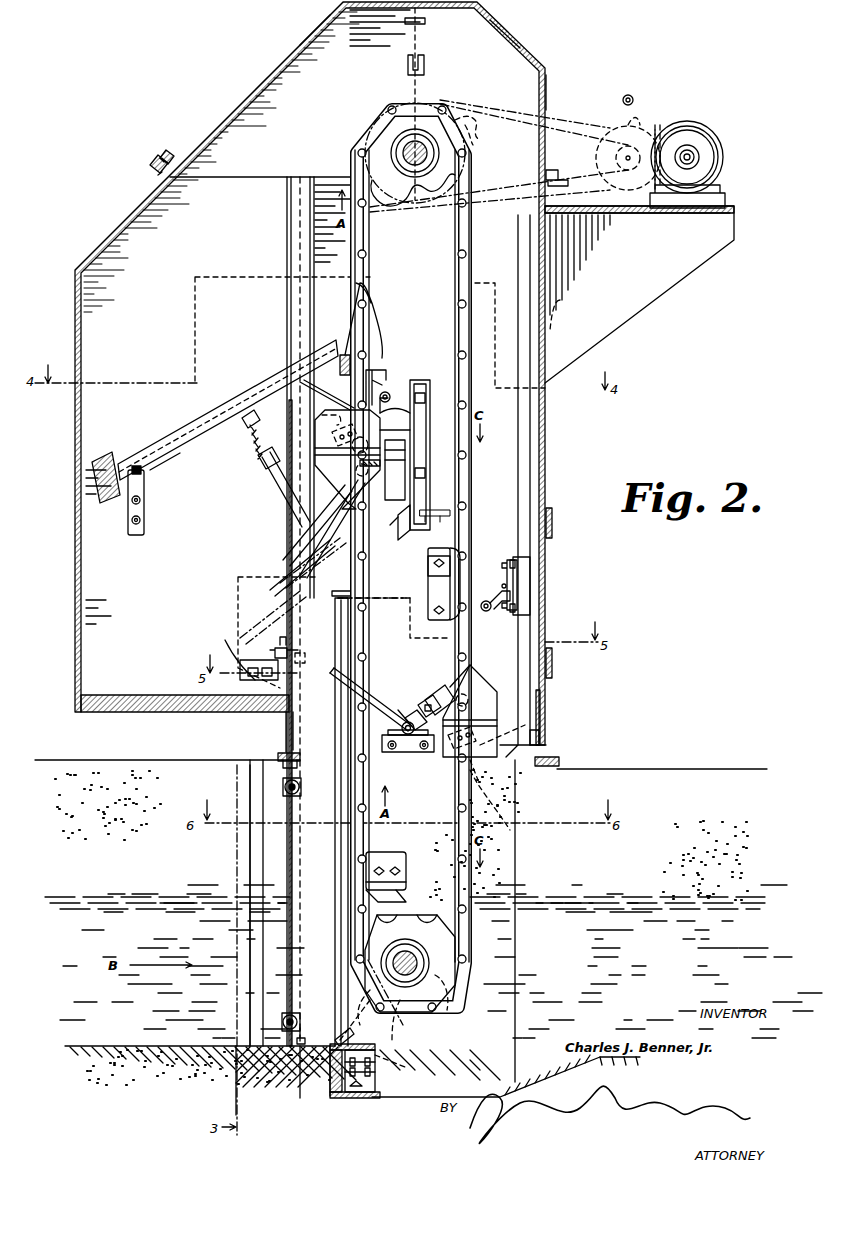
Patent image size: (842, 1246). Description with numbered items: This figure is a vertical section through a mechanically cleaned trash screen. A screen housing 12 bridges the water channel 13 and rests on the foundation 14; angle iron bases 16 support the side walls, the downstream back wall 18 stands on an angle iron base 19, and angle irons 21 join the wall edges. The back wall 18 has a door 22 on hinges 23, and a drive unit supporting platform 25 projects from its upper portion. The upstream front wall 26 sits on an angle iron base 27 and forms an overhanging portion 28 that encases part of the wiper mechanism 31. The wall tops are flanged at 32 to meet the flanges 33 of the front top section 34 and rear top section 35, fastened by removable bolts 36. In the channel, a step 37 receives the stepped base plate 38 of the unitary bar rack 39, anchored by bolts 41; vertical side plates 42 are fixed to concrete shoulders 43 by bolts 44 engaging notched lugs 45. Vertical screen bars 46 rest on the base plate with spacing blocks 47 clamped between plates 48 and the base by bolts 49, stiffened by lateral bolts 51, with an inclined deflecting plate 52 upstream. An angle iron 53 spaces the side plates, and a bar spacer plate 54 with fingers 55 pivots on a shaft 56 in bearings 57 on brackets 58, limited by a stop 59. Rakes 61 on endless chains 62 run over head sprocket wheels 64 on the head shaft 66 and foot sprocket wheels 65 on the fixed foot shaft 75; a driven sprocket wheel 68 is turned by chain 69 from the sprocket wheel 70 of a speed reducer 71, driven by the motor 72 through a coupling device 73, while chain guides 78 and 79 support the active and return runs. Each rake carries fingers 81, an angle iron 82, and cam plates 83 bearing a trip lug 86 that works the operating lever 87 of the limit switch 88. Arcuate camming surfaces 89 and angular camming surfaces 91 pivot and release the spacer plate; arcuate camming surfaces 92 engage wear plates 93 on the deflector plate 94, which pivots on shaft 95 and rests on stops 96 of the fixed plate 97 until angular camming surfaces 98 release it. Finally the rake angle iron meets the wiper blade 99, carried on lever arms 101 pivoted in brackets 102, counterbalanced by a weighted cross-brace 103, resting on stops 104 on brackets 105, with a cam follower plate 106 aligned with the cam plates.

The screen housing 12 is at (518, 50).
The channel 13 is at (692, 770).
The foundation 14 is at (534, 744).
The angle iron bases 16 is at (538, 724).
The back wall 18 is at (542, 702).
The angle iron base 19 is at (557, 757).
The angle irons 21 is at (530, 628).
The door 22 is at (538, 594).
The hinges 23 is at (547, 676).
The drive unit supporting platform 25 is at (730, 228).
The front wall 26 is at (286, 724).
The angle iron base 27 is at (282, 748).
The overhanging portion 28 is at (78, 524).
The wiper mechanism 31 is at (201, 417).
The flanges 32 is at (159, 167).
The opposing flanges 33 is at (166, 158).
The front top section 34 is at (314, 45).
The rear top section 35 is at (546, 86).
The bolts 36 is at (170, 160).
The step 37 is at (296, 1090).
The base plate 38 is at (330, 1090).
The unitary bar rack 39 is at (332, 931).
The bolts 41 is at (292, 1064).
The vertical side plates 42 is at (312, 842).
The concrete shoulders 43 is at (250, 866).
The bolts 44 is at (285, 782).
The notched lugs 45 is at (280, 792).
The vertical screen bars 46 is at (341, 858).
The spacing blocks 47 is at (346, 1032).
The plates 48 is at (346, 1050).
The bolts 49 is at (359, 1070).
The bolts 51 is at (346, 1032).
The inclined deflecting plate 52 is at (328, 1040).
The angle iron 53 is at (288, 646).
The bar spacer plate 54 is at (394, 700).
The fingers 55 is at (337, 683).
The shaft 56 is at (410, 714).
The bearings 57 is at (402, 724).
The brackets 58 is at (408, 764).
The stop 59 is at (428, 695).
The rakes 61 is at (320, 530).
The endless chains 62 is at (364, 254).
The head sprocket wheel 64 is at (462, 136).
The foot sprocket wheel 65 is at (443, 974).
The head shaft 66 is at (392, 138).
The driven sprocket wheel 68 is at (472, 136).
The chain 69 is at (580, 125).
The sprocket wheel 70 is at (602, 156).
The speed reducer 71 is at (652, 120).
The motor 72 is at (700, 122).
The coupling device 73 is at (702, 153).
The foot shaft 75 is at (406, 944).
The chain guides 78 is at (392, 382).
The chain guides 79 is at (430, 576).
The fingers 81 is at (318, 456).
The angle iron 82 is at (350, 424).
The cam plates 83 is at (362, 483).
The trip lug 86 is at (332, 414).
The operating lever 87 is at (490, 592).
The limit switch 88 is at (508, 562).
The arcuate camming surfaces 89 is at (400, 414).
The angular camming surfaces 91 is at (373, 474).
The arcuate camming surfaces 92 is at (298, 386).
The wear plates 93 is at (304, 545).
The deflector plate 94 is at (268, 580).
The shaft 95 is at (259, 680).
The stops 96 is at (410, 530).
The fixed plate 97 is at (410, 451).
The angular camming surfaces 98 is at (291, 502).
The wiper blade 99 is at (368, 363).
The lever arms 101 is at (262, 392).
The brackets 102 is at (146, 492).
The weighted cross-brace 103 is at (106, 454).
The stops 104 is at (238, 444).
The brackets 105 is at (278, 486).
The cam follower plate 106 is at (362, 322).